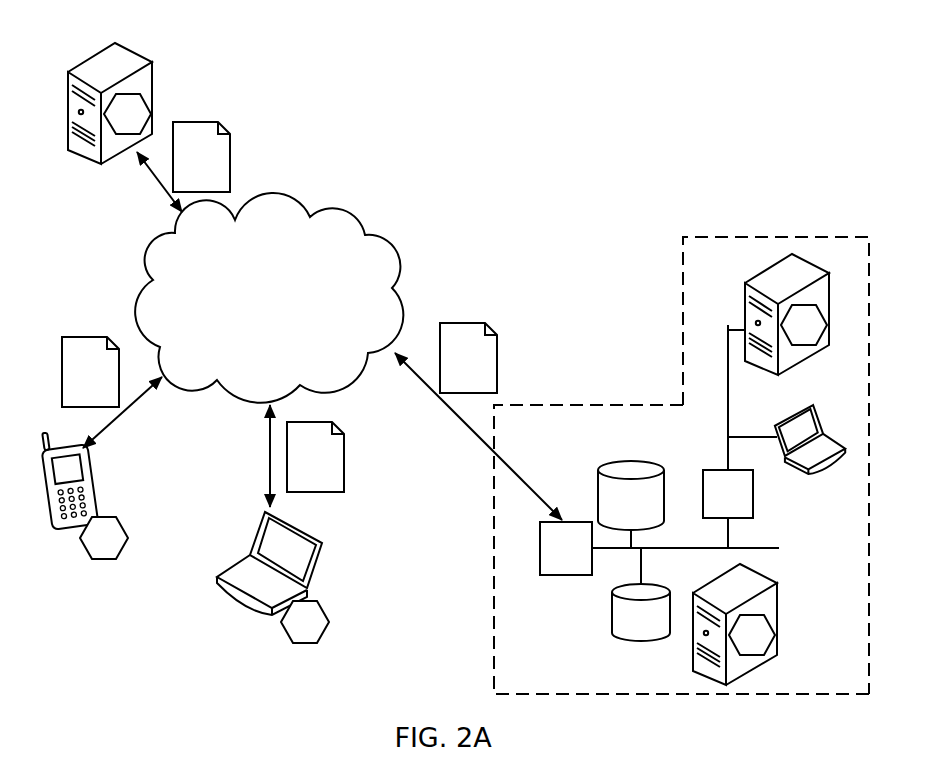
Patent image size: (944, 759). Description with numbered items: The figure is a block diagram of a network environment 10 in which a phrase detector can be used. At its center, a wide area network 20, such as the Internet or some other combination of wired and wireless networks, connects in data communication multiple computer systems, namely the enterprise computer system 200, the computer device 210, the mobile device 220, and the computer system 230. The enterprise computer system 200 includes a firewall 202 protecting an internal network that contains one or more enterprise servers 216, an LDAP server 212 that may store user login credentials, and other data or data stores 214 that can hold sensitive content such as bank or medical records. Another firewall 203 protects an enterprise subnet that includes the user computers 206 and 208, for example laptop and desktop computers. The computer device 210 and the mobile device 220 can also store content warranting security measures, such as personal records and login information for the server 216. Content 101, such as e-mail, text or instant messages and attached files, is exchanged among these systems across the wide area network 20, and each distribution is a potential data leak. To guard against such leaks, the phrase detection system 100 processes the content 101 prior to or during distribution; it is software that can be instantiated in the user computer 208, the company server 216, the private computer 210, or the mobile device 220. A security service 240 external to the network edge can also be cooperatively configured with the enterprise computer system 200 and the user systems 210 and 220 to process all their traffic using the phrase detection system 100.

The network environment 10 is at (522, 190).
The wide area network 20 is at (269, 298).
The phrase detection system 100 is at (144, 95).
The content 101 is at (279, 307).
The enterprise computer system 200 is at (627, 405).
The firewall 202 is at (562, 575).
The firewall 203 is at (753, 493).
The user computer 206 is at (792, 418).
The user computer 208 is at (748, 282).
The computer device 210 is at (322, 545).
The LDAP server 212 is at (623, 460).
The data store 214 is at (612, 613).
The enterprise server 216 is at (778, 585).
The mobile device 220 is at (96, 477).
The computer system 230 is at (793, 237).
The security service 240 is at (78, 66).